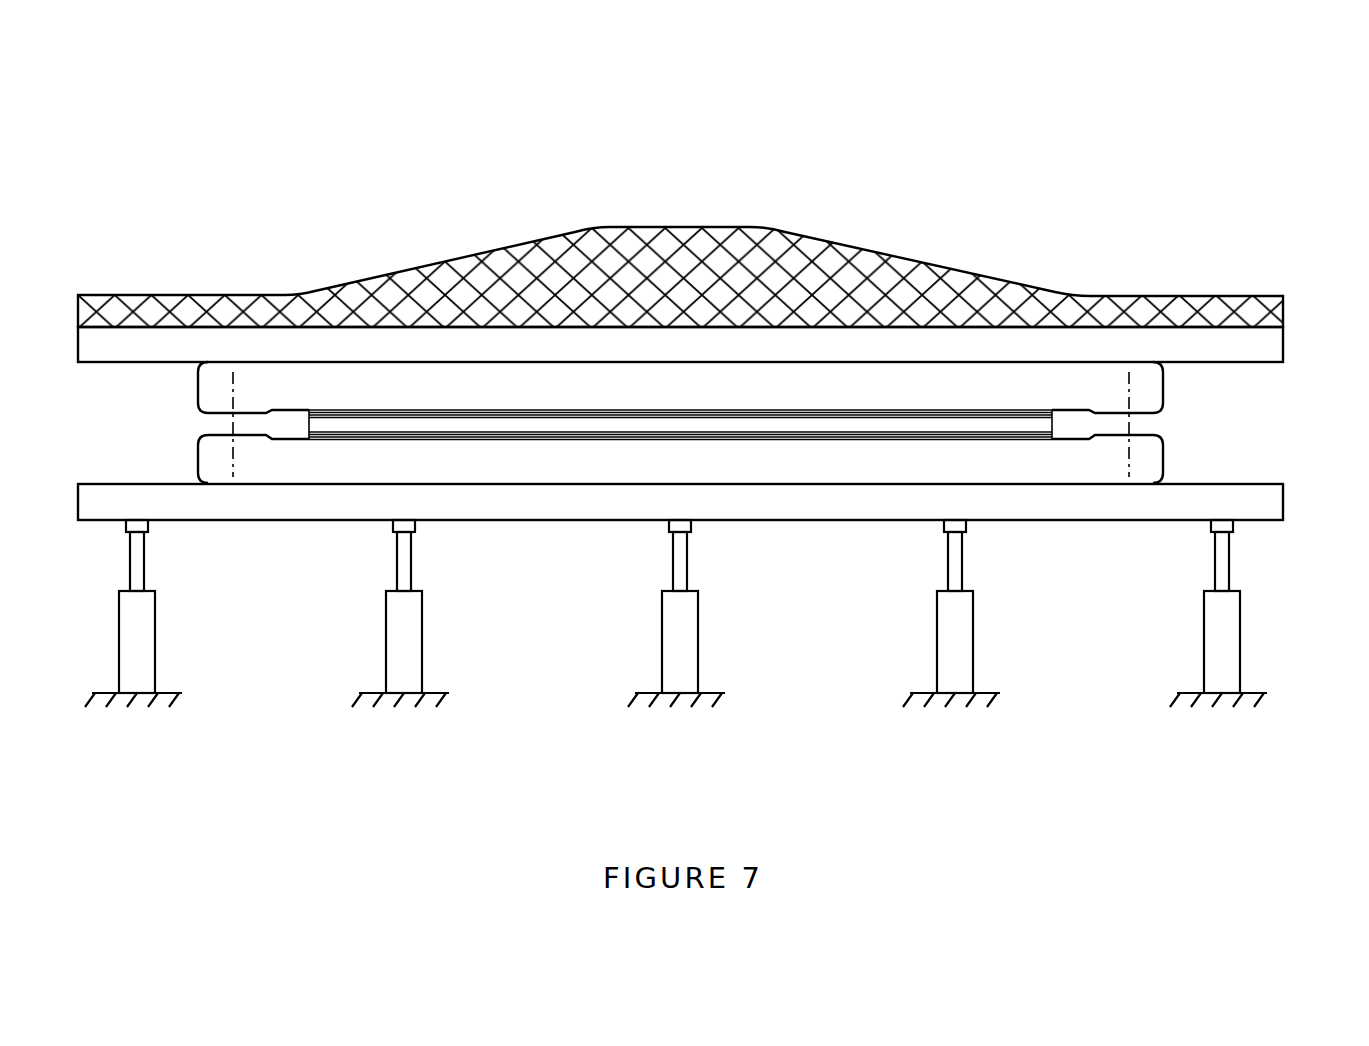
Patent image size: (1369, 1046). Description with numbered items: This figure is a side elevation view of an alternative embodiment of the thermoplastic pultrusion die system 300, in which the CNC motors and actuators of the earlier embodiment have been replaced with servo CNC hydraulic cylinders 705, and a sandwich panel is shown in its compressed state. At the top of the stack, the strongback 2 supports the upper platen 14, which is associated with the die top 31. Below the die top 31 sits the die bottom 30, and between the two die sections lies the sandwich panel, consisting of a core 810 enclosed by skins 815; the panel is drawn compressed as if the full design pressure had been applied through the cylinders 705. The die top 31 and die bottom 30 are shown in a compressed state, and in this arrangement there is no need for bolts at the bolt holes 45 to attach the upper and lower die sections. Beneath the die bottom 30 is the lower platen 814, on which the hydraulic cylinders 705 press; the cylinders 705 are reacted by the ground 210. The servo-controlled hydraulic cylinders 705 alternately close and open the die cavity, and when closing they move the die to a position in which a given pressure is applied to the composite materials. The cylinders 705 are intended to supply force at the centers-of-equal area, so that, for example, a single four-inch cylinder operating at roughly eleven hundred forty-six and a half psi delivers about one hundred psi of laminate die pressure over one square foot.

The strongback 2 is at (800, 260).
The platen 14 is at (680, 344).
The die bottom 30 is at (682, 297).
The die top 31 is at (708, 388).
The bolt holes 45 is at (233, 389).
The core 810 is at (327, 427).
The skins 815 is at (380, 437).
The lower platen 814 is at (680, 502).
The servo CNC hydraulic cylinders 705 is at (156, 643).
The ground 210 is at (418, 698).
The thermoplastic pultrusion die system 300 is at (723, 485).